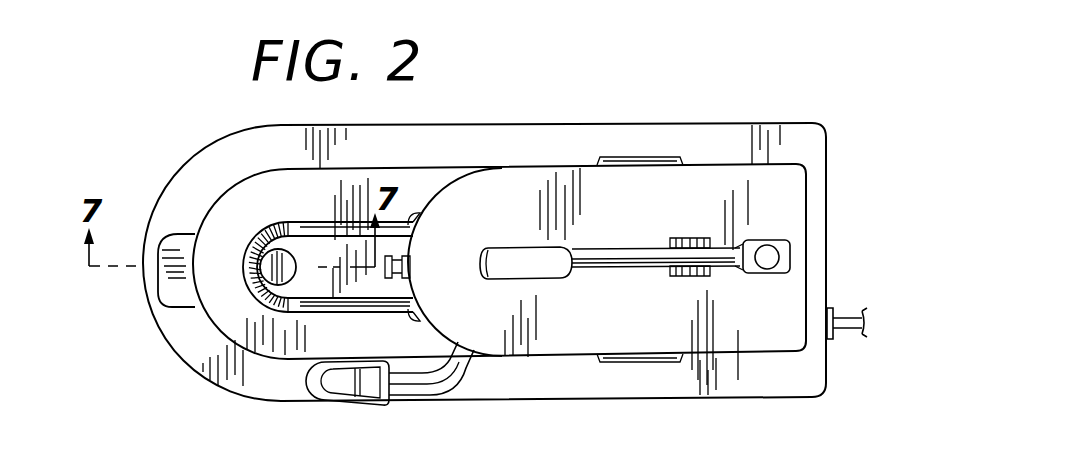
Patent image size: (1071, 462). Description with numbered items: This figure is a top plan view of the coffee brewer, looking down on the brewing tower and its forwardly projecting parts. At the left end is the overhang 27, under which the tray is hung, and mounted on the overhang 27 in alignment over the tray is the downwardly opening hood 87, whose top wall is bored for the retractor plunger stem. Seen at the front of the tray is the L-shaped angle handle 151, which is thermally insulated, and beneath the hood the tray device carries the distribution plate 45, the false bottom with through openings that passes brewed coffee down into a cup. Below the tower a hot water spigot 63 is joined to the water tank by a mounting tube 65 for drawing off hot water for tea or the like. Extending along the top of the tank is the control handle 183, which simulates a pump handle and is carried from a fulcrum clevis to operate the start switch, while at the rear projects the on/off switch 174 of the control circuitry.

The overhang 27 is at (233, 187).
The distribution plate 45 is at (170, 348).
The hood 87 is at (316, 221).
The angle handle 151 is at (160, 298).
The hot water spigot 63 is at (318, 400).
The mounting tube 65 is at (462, 385).
The control handle 183 is at (642, 247).
The on/off switch 174 is at (846, 372).